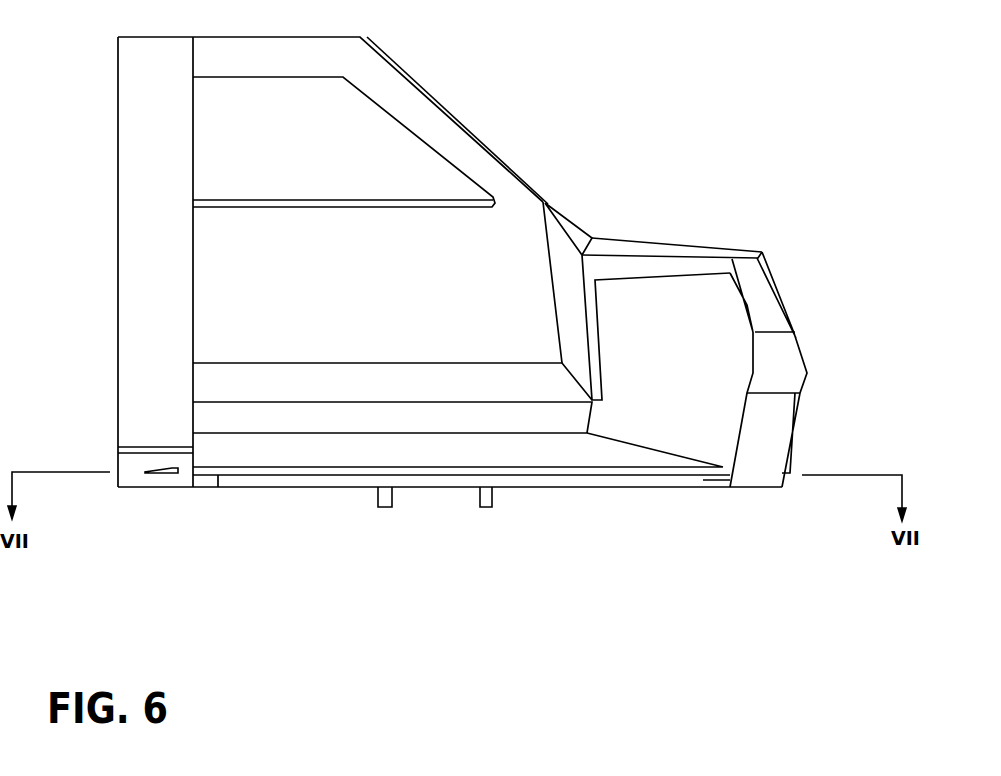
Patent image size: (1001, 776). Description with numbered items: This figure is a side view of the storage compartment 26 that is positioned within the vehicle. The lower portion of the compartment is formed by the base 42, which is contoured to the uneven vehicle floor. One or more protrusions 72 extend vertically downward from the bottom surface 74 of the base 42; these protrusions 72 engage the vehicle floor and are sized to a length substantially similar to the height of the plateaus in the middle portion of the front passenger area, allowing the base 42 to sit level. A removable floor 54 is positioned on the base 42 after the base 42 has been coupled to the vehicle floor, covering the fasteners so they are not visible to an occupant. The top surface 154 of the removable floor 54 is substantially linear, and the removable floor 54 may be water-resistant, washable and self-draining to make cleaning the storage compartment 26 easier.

The storage compartment 26 is at (98, 156).
The base 42 is at (185, 480).
The top surface 154 is at (281, 460).
The protrusions 72 is at (390, 498).
The removable floor 54 is at (583, 452).
The bottom surface 74 is at (627, 487).